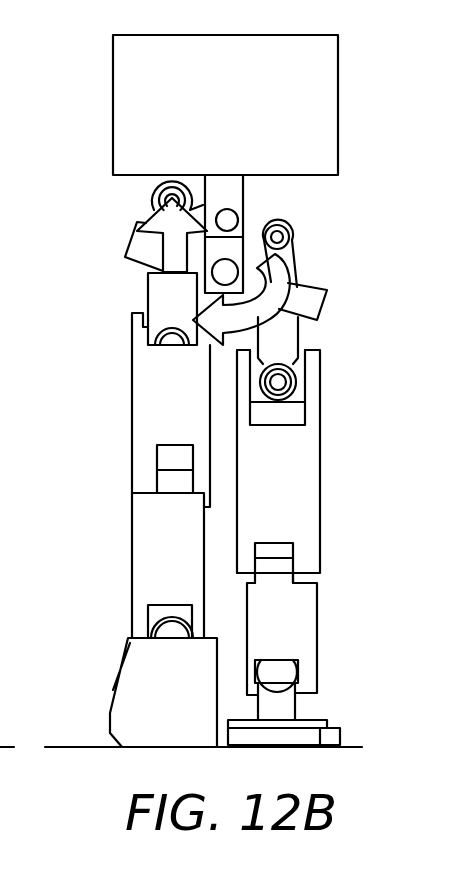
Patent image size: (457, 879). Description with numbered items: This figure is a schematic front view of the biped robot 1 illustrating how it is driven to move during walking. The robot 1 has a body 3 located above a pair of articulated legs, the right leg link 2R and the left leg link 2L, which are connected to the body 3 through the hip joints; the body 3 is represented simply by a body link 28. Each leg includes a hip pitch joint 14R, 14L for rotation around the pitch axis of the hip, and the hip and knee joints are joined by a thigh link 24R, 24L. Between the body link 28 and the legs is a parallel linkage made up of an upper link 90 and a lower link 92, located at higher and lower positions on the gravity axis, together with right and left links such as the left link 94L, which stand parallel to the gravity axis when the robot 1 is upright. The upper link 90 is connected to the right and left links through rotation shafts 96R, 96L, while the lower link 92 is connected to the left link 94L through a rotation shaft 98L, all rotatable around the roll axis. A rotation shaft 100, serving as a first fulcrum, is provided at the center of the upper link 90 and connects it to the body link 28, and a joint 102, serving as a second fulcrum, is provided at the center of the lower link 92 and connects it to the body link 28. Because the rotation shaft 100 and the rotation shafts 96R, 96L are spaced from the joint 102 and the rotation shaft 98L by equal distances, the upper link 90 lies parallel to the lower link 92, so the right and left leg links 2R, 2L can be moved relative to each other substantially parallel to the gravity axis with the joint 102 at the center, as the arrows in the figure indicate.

The robot 1 is at (107, 502).
The body 3 is at (122, 92).
The right leg link 2R is at (122, 510).
The left leg link 2L is at (316, 531).
The right hip pitch joint 14R is at (158, 327).
The left hip pitch joint 14L is at (280, 382).
The right thigh link 24R is at (145, 431).
The left thigh link 24L is at (303, 472).
The body link 28 is at (240, 182).
The upper link 90 is at (160, 190).
The lower link 92 is at (312, 316).
The left link 94L is at (292, 246).
The rotation shaft 96R is at (157, 208).
The rotation shaft 96L is at (286, 234).
The rotation shaft 98L is at (320, 284).
The rotation shaft 100 is at (232, 212).
The joint 102 is at (223, 273).